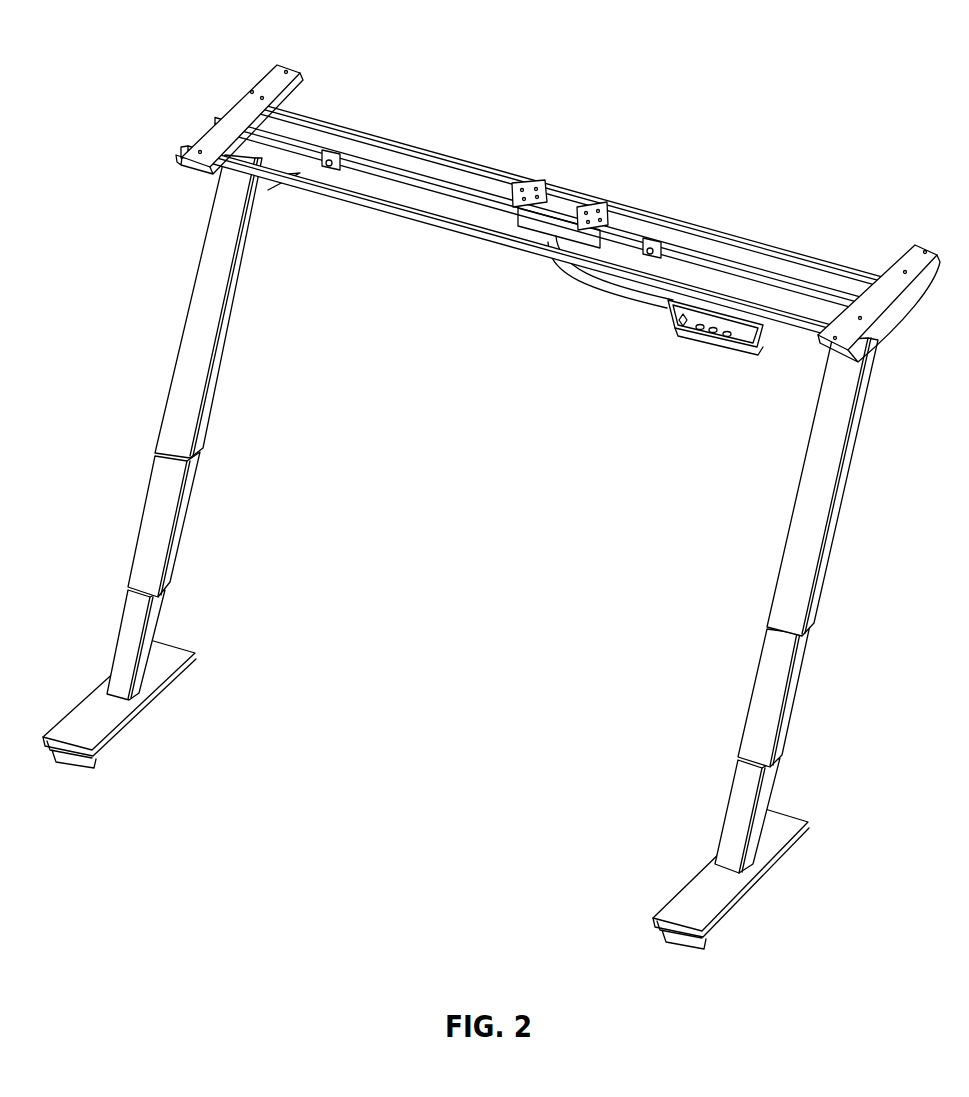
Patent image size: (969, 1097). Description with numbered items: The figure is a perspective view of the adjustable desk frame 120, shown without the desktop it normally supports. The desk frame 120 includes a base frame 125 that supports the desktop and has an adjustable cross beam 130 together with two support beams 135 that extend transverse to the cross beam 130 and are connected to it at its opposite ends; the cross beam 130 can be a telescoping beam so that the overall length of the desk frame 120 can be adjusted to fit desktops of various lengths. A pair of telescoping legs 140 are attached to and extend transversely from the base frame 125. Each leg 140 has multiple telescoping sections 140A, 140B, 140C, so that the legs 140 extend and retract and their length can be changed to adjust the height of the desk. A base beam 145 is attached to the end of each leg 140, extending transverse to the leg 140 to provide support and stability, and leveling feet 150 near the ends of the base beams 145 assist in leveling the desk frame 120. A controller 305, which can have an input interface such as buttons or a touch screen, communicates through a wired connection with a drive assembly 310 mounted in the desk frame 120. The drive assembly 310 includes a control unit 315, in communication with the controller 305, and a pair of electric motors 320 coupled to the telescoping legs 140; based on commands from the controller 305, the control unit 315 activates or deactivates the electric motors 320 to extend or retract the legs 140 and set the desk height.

The desk frame 120 is at (483, 508).
The base frame 125 is at (535, 172).
The cross beam 130 is at (403, 142).
The support beams 135 is at (276, 78).
The telescoping legs 140 is at (452, 514).
The telescoping section 140A is at (208, 303).
The telescoping section 140B is at (150, 525).
The telescoping section 140C is at (130, 622).
The base beam 145 is at (426, 825).
The leveling feet 150 is at (62, 768).
The controller 305 is at (737, 350).
The drive assembly 310 is at (510, 215).
The control unit 315 is at (560, 213).
The electric motors 320 is at (288, 130).